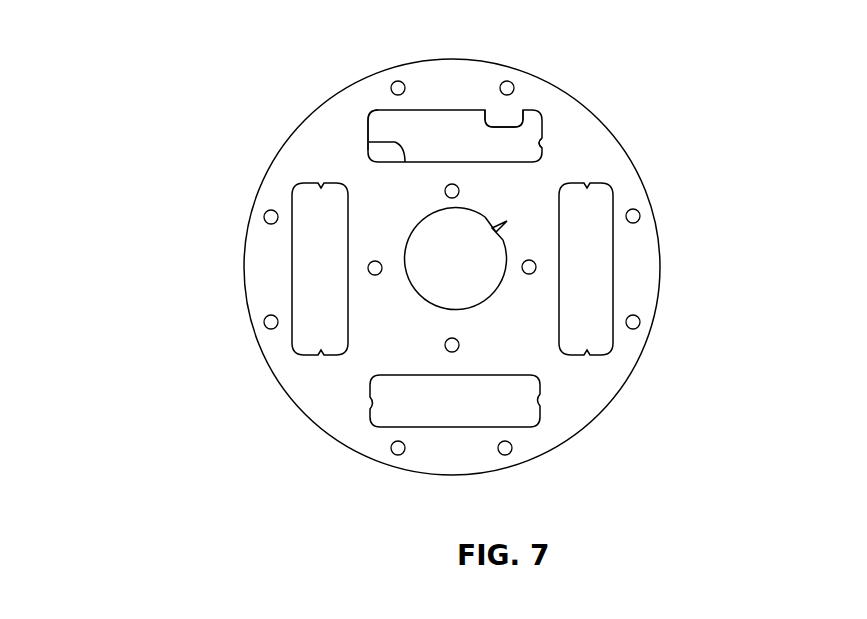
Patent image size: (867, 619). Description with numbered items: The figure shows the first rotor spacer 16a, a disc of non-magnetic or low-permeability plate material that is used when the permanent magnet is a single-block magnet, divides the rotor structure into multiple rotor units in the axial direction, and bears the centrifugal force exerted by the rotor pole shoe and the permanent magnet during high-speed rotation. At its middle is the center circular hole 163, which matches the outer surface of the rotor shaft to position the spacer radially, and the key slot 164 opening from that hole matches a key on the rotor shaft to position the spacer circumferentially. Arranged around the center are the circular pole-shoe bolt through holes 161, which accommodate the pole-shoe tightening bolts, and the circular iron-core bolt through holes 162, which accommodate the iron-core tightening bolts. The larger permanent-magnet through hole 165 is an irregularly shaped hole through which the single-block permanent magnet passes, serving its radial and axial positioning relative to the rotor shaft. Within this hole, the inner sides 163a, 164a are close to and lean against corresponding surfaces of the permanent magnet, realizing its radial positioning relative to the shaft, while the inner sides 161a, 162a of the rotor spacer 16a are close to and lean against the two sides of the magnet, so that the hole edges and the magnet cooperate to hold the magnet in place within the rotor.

The first rotor spacer 16a is at (190, 134).
The pole-shoe bolt through hole 161 is at (641, 322).
The iron-core bolt through hole 162 is at (537, 266).
The center circular hole 163 is at (490, 305).
The key slot 164 is at (505, 222).
The permanent-magnet through hole 165 is at (427, 133).
The inner side of rotor spacer 161a is at (540, 146).
The inner side of rotor spacer 162a is at (368, 123).
The inner side of permanent-magnet through hole 163a is at (368, 145).
The inner side of permanent-magnet through hole 164a is at (528, 108).